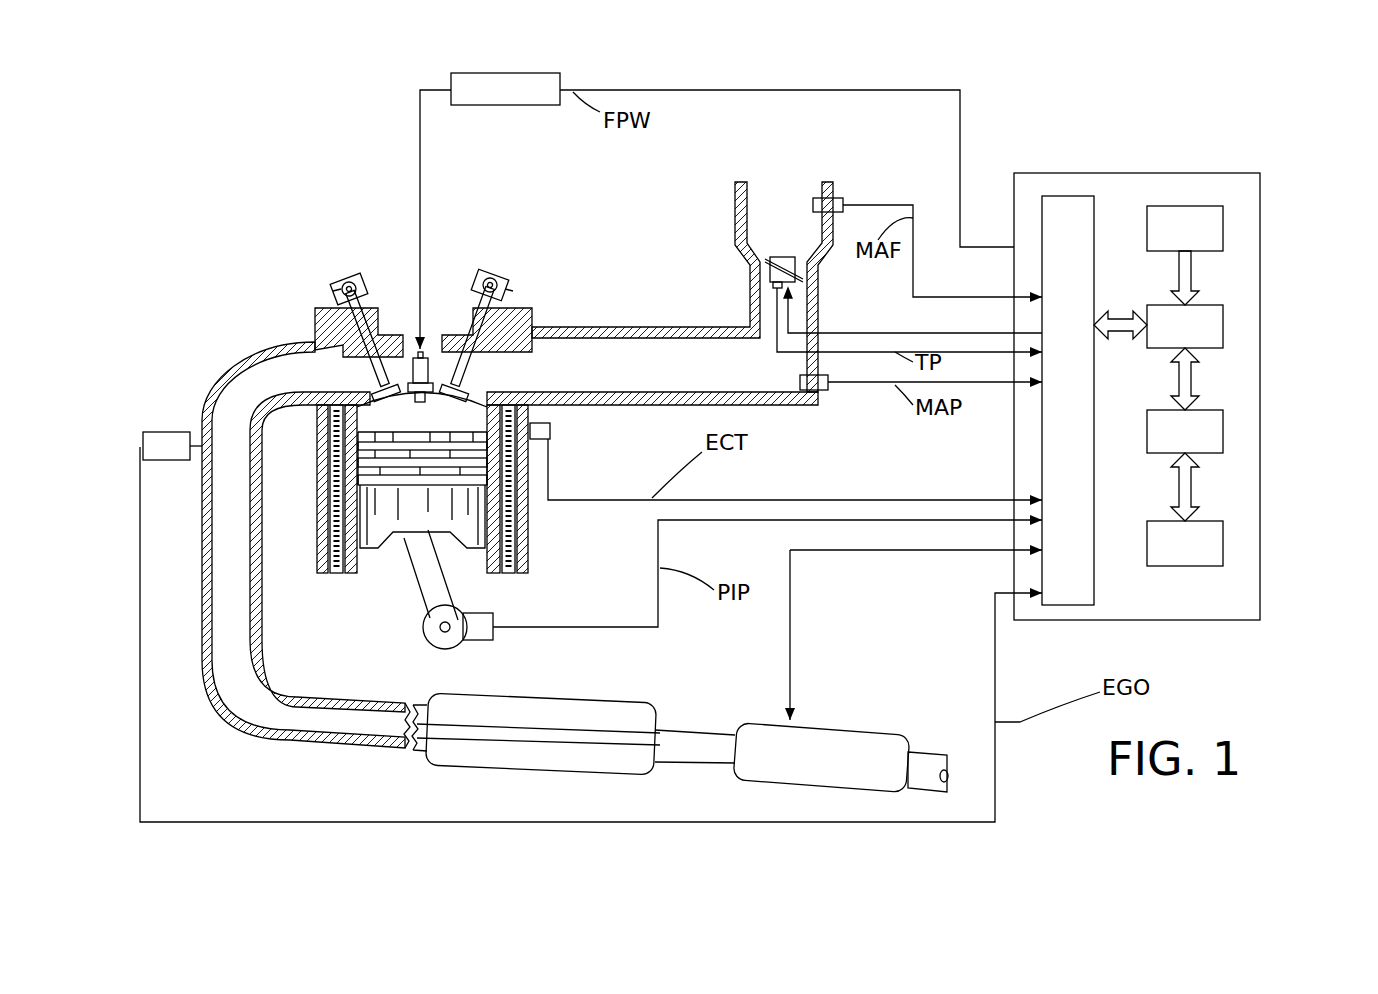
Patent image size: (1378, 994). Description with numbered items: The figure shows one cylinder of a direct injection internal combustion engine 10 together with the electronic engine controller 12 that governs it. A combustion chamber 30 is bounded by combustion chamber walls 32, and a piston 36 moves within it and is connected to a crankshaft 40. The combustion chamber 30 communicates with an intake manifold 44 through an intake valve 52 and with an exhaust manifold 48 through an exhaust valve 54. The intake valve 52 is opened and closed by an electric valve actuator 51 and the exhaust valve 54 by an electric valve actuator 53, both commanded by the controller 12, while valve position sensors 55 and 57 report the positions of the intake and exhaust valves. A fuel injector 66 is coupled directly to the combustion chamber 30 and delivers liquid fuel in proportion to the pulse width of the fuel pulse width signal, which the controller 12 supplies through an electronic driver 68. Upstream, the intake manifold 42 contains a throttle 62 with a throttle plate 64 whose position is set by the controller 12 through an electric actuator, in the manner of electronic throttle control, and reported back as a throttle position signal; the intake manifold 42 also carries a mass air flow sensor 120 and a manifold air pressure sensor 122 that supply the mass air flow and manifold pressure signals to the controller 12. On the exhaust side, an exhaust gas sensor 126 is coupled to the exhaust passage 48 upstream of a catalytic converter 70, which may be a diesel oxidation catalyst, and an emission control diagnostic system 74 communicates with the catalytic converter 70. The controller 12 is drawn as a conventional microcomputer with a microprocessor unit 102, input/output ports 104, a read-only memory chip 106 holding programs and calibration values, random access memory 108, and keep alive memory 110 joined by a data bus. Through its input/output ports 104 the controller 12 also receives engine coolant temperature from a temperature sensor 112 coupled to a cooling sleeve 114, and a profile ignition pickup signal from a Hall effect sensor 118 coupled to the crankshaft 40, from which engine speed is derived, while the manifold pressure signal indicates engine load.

The direct injection internal combustion engine 10 is at (244, 254).
The electronic engine controller 12 is at (1248, 175).
The combustion chamber 30 is at (327, 515).
The combustion chamber walls 32 is at (360, 560).
The piston 36 is at (404, 522).
The crankshaft 40 is at (432, 648).
The intake manifold 42 is at (798, 230).
The intake manifold 44 is at (728, 377).
The exhaust manifold 48 is at (296, 384).
The electric valve actuator 51 is at (484, 277).
The intake valve 52 is at (508, 378).
The electric valve actuator 53 is at (353, 278).
The exhaust valve 54 is at (377, 388).
The valve position sensor 55 is at (512, 293).
The valve position sensor 57 is at (336, 291).
The throttle 62 is at (808, 268).
The throttle plate 64 is at (765, 262).
The fuel injector 66 is at (424, 355).
The electronic driver 68 is at (540, 105).
The catalytic converter 70 is at (612, 693).
The emission control diagnostic system 74 is at (880, 714).
The microprocessor unit 102 is at (1226, 325).
The input/output ports 104 is at (1097, 205).
The read-only memory chip 106 is at (1226, 228).
The random access memory 108 is at (1226, 432).
The keep alive memory 110 is at (1226, 542).
The temperature sensor 112 is at (549, 448).
The cooling sleeve 114 is at (512, 522).
The Hall effect sensor 118 is at (478, 642).
The mass air flow sensor 120 is at (838, 198).
The manifold air pressure sensor 122 is at (830, 392).
The exhaust gas sensor 126 is at (143, 437).